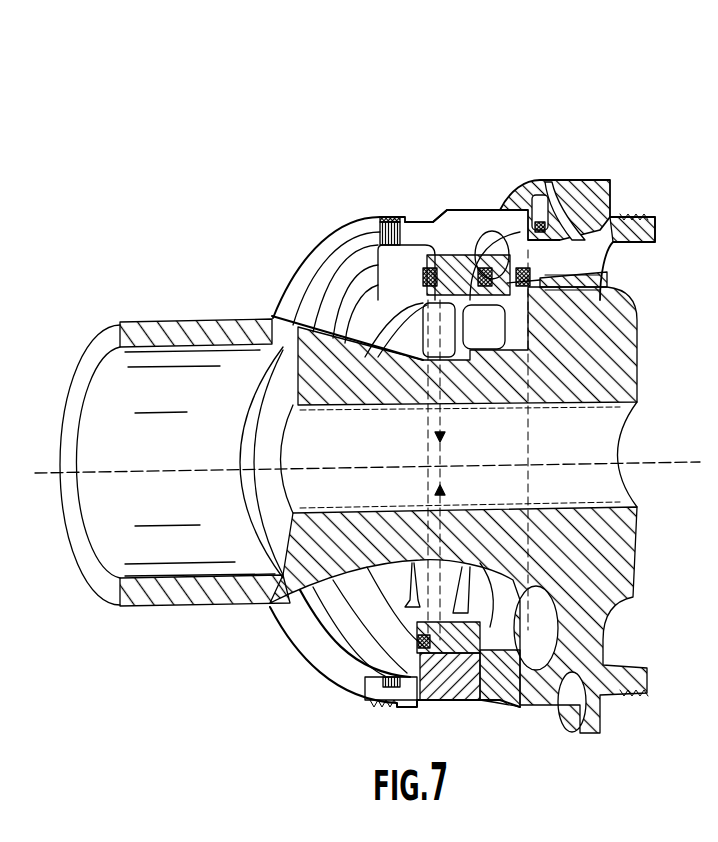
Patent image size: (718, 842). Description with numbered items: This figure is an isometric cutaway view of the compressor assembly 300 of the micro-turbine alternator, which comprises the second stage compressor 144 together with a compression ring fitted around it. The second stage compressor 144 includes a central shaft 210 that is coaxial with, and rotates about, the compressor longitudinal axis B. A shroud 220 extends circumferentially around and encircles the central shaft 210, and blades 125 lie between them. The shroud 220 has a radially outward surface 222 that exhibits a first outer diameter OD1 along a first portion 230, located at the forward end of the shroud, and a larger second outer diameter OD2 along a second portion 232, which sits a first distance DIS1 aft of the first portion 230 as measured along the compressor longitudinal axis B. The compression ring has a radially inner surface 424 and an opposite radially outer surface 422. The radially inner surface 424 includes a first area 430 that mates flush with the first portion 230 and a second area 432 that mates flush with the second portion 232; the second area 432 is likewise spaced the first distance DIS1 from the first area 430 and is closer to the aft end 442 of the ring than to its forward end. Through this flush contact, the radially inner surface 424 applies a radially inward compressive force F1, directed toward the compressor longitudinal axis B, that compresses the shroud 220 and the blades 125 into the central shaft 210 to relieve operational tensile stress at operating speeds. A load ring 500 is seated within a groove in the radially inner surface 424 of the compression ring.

The compressor assembly 300 is at (130, 112).
The load ring 500 is at (345, 165).
The second stage compressor 144 is at (125, 270).
The central shaft 210 is at (300, 340).
The blades 125 is at (459, 445).
The first area 430 is at (423, 277).
The first portion 230 is at (454, 259).
The radially inner surface 424 is at (435, 330).
The radially outward surface 222 is at (493, 240).
The aft end 442 is at (562, 235).
The second portion 232 is at (538, 195).
The second area 432 is at (590, 255).
The shroud 220 is at (590, 287).
The radially outer surface 422 is at (440, 213).
The first distance DIS1 is at (578, 270).
The first outer diameter OD1 is at (480, 428).
The second outer diameter OD2 is at (528, 452).
The radially inward compressive force F1 is at (488, 542).
The compressor longitudinal axis B is at (663, 464).